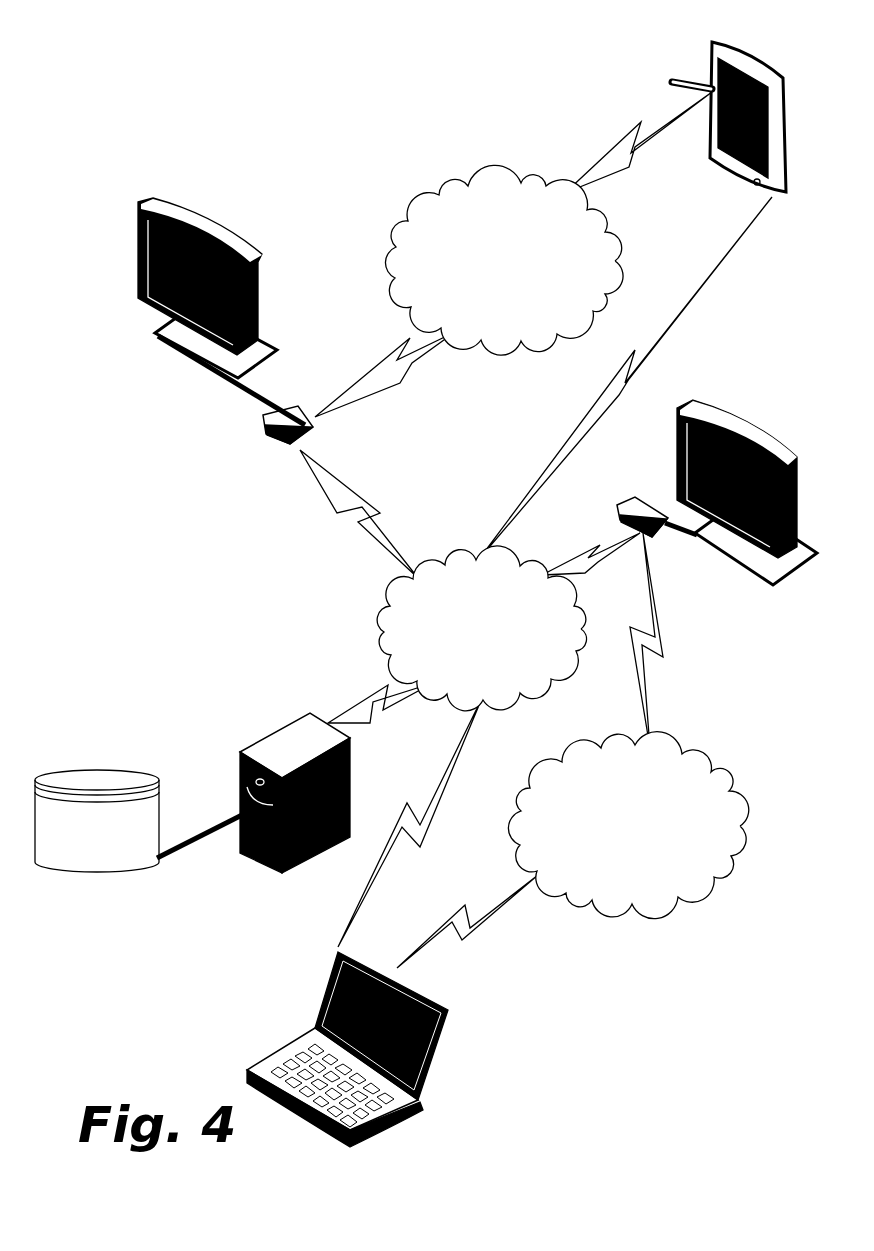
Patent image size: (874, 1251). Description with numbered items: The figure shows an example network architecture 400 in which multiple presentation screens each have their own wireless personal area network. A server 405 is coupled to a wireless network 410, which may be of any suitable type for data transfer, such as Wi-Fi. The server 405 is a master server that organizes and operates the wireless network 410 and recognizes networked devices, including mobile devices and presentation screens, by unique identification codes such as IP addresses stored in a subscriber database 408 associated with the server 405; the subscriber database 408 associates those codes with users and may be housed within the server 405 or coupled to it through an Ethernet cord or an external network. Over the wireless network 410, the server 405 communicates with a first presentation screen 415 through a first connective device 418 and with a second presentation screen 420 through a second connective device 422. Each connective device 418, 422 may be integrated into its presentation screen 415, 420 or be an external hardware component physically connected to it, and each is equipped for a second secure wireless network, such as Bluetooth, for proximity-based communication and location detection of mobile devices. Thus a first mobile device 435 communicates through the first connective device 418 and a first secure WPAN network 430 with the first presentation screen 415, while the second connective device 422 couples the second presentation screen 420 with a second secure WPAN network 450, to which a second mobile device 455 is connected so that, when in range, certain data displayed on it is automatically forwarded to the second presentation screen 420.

The network architecture 400 is at (146, 44).
The server 405 is at (311, 714).
The subscriber database 408 is at (98, 770).
The wireless network 410 is at (463, 656).
The first presentation screen 415 is at (159, 196).
The first connective device 418 is at (262, 431).
The second presentation screen 420 is at (797, 455).
The second connective device 422 is at (638, 497).
The first secure WPAN network 430 is at (485, 287).
The first mobile device 435 is at (775, 63).
The second secure WPAN network 450 is at (610, 851).
The second mobile device 455 is at (339, 952).